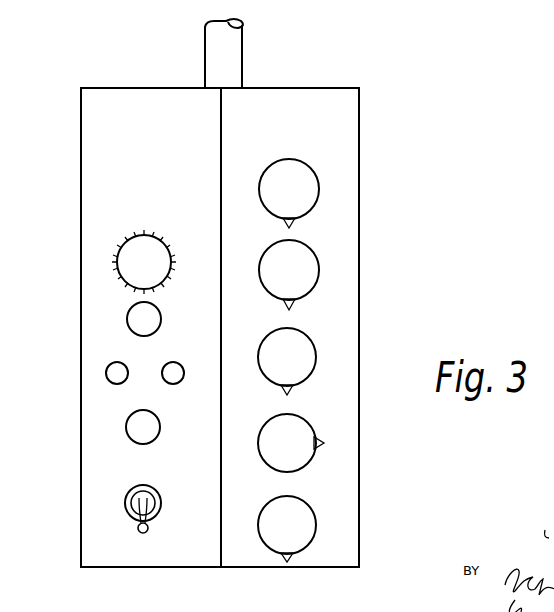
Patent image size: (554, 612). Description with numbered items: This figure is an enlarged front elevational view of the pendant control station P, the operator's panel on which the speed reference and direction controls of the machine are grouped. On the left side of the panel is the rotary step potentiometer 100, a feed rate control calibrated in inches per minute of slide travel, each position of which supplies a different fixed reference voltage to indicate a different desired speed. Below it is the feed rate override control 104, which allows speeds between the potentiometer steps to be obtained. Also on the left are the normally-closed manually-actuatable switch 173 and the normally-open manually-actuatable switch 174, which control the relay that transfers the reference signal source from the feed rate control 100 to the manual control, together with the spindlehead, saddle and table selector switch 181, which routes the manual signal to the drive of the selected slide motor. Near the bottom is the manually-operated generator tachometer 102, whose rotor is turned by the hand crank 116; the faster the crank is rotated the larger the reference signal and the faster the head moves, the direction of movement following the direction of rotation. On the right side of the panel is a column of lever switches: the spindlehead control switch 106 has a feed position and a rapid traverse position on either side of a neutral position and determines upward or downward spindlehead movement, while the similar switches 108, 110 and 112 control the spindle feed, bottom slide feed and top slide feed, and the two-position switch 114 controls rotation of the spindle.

The pendant control station P is at (321, 83).
The rotary step potentiometer 100 is at (117, 260).
The manually-operated generator tachometer 102 is at (125, 502).
The feed rate override control 104 is at (127, 319).
The spindlehead control switch 106 is at (324, 443).
The spindle feed control switch 108 is at (319, 272).
The bottom slide feed control switch 110 is at (315, 349).
The top slide feed control switch 112 is at (316, 520).
The spindle rotation control switch 114 is at (319, 191).
The hand crank 116 is at (147, 531).
The normally-closed manually-actuatable switch 173 is at (173, 362).
The normally-open manually-actuatable switch 174 is at (106, 373).
The spindlehead, saddle and table selector switch 181 is at (126, 425).